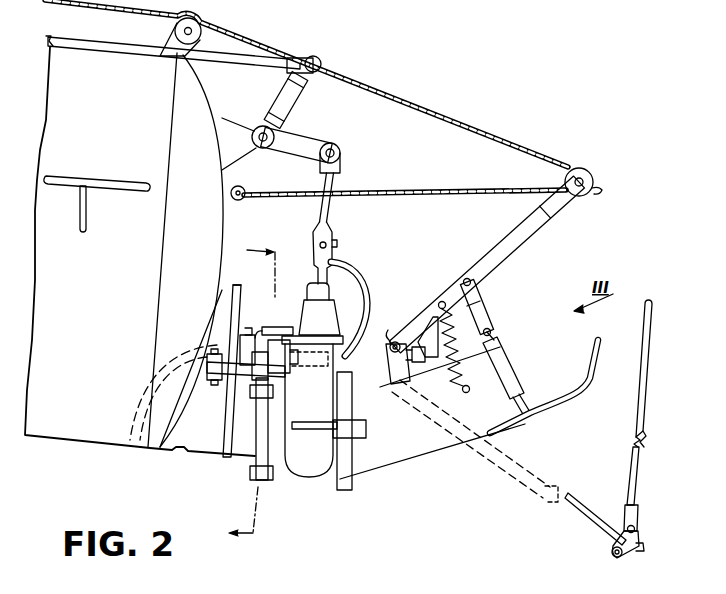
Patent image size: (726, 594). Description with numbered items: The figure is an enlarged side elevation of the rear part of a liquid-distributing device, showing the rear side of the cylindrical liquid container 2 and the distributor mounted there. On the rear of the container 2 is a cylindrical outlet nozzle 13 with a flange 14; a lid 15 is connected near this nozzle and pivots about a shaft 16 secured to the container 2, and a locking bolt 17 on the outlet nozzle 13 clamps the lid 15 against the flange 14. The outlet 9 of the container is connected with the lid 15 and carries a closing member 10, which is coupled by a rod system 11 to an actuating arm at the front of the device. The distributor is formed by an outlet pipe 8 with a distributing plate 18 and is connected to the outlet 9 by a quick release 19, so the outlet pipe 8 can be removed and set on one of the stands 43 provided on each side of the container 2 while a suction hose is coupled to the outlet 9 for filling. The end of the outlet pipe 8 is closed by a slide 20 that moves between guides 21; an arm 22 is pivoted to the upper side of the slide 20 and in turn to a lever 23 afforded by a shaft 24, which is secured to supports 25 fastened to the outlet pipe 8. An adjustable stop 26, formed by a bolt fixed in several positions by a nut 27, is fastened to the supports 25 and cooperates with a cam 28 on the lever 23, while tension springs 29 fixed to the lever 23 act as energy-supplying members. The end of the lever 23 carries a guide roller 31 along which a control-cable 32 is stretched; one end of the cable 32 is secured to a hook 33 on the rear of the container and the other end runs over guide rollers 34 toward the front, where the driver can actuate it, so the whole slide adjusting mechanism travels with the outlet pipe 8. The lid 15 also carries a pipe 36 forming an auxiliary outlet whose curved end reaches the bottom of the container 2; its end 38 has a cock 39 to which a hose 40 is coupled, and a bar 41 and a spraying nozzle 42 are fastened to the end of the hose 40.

The liquid container 2 is at (52, 440).
The outlet pipe 8 is at (413, 455).
The outlet 9 is at (246, 460).
The closing member 10 is at (312, 478).
The rod system 11 is at (308, 142).
The cylindrical outlet nozzle 13 is at (182, 449).
The flange 14 is at (222, 452).
The lid 15 is at (244, 290).
The shaft 16 is at (250, 328).
The locking bolt 17 is at (196, 371).
The distributing plate 18 is at (577, 401).
The quick release 19 is at (367, 430).
The slide 20 is at (506, 354).
The guides 21 is at (520, 386).
The arm 22 is at (490, 311).
The lever 23 is at (500, 258).
The shaft 24 is at (392, 340).
The supports 25 is at (390, 348).
The adjustable stop 26 is at (412, 374).
The nut 27 is at (400, 330).
The cam 28 is at (428, 364).
The tension springs 29 is at (464, 352).
The guide roller 31 is at (600, 188).
The control-cable 32 is at (472, 122).
The hook 33 is at (243, 189).
The guide rollers 34 is at (176, 26).
The pipe 36 is at (130, 400).
The end of the pipe 38 is at (262, 327).
The cock 39 is at (292, 370).
The hose 40 is at (355, 268).
The bar 41 is at (636, 443).
The spraying nozzle 42 is at (628, 552).
The stands 43 is at (118, 178).